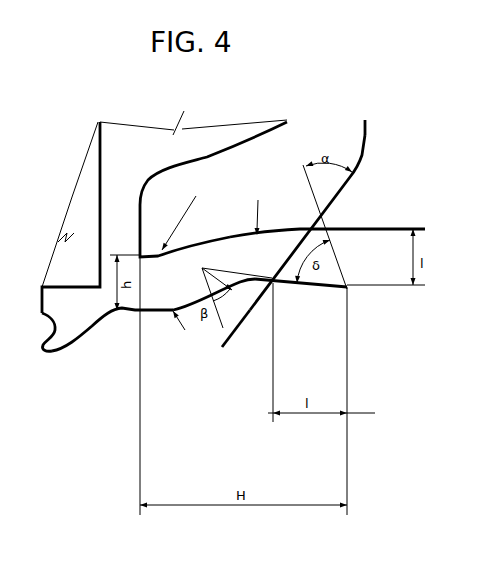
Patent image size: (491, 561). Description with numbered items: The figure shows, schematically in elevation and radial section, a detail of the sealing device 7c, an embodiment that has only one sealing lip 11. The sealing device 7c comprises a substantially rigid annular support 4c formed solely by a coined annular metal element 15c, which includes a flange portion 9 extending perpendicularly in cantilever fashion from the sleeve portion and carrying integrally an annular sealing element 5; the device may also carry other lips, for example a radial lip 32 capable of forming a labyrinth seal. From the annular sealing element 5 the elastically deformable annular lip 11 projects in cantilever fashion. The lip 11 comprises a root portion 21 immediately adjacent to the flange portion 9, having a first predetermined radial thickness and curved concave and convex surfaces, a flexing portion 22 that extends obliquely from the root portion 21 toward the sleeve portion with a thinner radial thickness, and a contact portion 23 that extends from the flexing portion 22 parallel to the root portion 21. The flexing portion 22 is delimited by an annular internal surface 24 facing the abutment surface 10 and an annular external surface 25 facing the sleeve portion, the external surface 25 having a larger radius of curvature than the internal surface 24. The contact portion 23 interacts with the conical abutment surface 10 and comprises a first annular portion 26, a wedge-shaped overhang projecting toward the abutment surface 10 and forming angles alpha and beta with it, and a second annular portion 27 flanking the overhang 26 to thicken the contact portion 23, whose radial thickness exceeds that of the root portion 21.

The annular support 4c is at (66, 191).
The coined annular metal element 15c is at (84, 162).
The sealing device 7c is at (381, 93).
The flange portion 9 is at (50, 261).
The annular sealing element 5 is at (88, 332).
The radial lip 32 is at (41, 344).
The abutment surface 10 is at (332, 197).
The first annular lip 11 is at (278, 193).
The root portion 21 is at (143, 312).
The flexing portion 22 is at (220, 258).
The contact portion 23 is at (327, 288).
The annular internal surface 24 is at (232, 333).
The annular external surface 25 is at (241, 230).
The first annular portion 26 is at (351, 290).
The second annular portion 27 is at (321, 244).